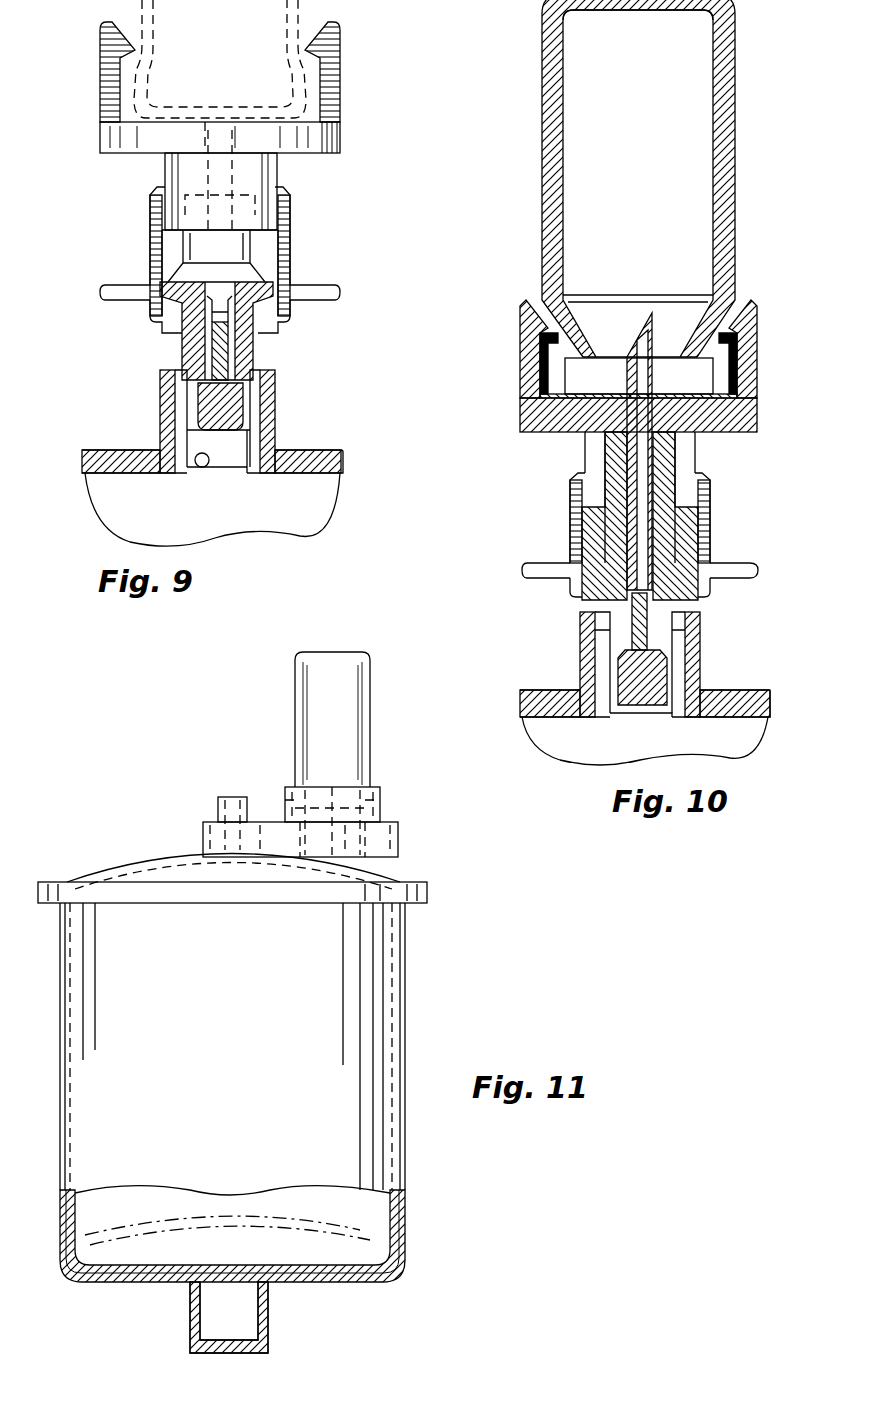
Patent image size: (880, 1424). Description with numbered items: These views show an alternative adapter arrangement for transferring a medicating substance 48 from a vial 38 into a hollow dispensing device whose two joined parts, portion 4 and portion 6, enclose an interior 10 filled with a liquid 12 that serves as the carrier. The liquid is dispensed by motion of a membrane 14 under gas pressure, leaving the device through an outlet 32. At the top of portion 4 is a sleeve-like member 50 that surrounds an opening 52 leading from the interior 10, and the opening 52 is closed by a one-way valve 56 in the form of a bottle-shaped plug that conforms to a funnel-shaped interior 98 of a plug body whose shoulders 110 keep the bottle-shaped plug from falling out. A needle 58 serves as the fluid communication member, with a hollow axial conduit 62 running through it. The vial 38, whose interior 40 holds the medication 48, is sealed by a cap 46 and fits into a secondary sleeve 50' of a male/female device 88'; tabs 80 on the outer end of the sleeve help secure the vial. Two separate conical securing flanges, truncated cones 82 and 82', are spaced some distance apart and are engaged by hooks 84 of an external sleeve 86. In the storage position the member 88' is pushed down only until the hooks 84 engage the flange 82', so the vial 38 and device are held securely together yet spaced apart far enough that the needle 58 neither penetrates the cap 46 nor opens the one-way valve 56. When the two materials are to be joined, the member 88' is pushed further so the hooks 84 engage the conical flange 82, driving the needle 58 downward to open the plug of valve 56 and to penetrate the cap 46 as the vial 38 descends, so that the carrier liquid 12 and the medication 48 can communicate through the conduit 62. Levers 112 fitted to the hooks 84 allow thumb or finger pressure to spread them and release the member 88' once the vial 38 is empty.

In FIG. 9, the portion of device 4 is at (330, 450).
In FIG. 10, the portion of device 4 is at (753, 690).
In FIG. 11, the portion of device 4 is at (138, 858).
In FIG. 11, the portion of device 6 is at (405, 950).
In FIG. 9, the interior 10 is at (160, 518).
In FIG. 10, the interior 10 is at (582, 749).
In FIG. 11, the interior 10 is at (115, 1219).
In FIG. 10, the liquid 12 is at (687, 749).
In FIG. 11, the membrane 14 is at (352, 1230).
In FIG. 11, the outlet 32 is at (218, 806).
In FIG. 10, the vial 38 is at (737, 142).
In FIG. 11, the vial 38 is at (295, 670).
In FIG. 10, the interior of vial 40 is at (652, 76).
In FIG. 10, the cap 46 is at (556, 366).
In FIG. 10, the medicating substance 48 is at (655, 159).
In FIG. 9, the sleeve-like member 50 is at (218, 445).
In FIG. 10, the sleeve-like member 50 is at (643, 675).
In FIG. 11, the sleeve-like member 50 is at (315, 783).
In FIG. 9, the secondary sleeve 50' is at (251, 76).
In FIG. 10, the secondary sleeve 50' is at (644, 357).
In FIG. 9, the opening 52 is at (232, 470).
In FIG. 10, the opening 52 is at (643, 713).
In FIG. 9, the one-way valve 56 is at (217, 405).
In FIG. 10, the one-way valve 56 is at (667, 673).
In FIG. 9, the needle 58 is at (232, 135).
In FIG. 10, the needle 58 is at (673, 497).
In FIG. 11, the needle 58 is at (335, 778).
In FIG. 10, the hollow axial conduit 62 is at (664, 503).
In FIG. 9, the tabs 80 is at (335, 46).
In FIG. 10, the tabs 80 is at (745, 318).
In FIG. 9, the truncated cone 82 is at (273, 315).
In FIG. 10, the truncated cone 82 is at (608, 481).
In FIG. 10, the truncated cone 82' is at (585, 481).
In FIG. 9, the hooks 84 is at (280, 318).
In FIG. 10, the hooks 84 is at (587, 594).
In FIG. 9, the external sleeve 86 is at (290, 220).
In FIG. 9, the male/female device 88' is at (242, 273).
In FIG. 10, the male/female device 88' is at (637, 524).
In FIG. 10, the funnel-shaped interior 98 is at (610, 647).
In FIG. 9, the shoulders 110 is at (205, 468).
In FIG. 10, the levers 112 is at (530, 578).